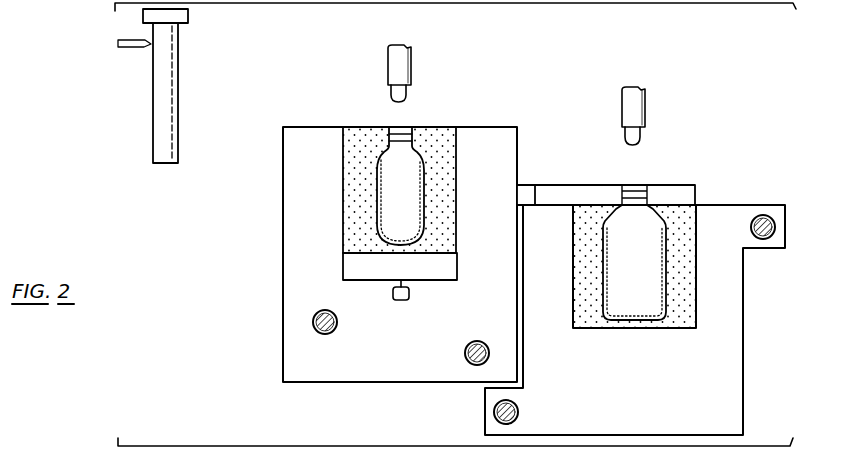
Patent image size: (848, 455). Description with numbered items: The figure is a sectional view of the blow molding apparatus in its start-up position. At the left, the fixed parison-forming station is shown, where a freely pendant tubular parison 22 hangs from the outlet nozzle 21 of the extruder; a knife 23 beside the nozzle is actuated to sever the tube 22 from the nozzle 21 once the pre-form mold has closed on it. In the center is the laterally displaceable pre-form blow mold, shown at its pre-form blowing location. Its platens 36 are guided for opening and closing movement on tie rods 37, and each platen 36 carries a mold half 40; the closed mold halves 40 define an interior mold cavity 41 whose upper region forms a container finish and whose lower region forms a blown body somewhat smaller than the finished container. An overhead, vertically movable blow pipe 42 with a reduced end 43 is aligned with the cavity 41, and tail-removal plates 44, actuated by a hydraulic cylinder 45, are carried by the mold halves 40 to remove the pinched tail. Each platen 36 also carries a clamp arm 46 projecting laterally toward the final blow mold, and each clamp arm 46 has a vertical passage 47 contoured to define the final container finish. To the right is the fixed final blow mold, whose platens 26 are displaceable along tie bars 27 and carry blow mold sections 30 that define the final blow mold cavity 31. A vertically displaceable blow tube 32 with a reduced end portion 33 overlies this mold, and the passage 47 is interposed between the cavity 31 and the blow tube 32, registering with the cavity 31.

The outlet nozzle 21 is at (143, 19).
The tubular parison 22 is at (172, 52).
The knife 23 is at (133, 47).
The platens 26 is at (650, 392).
The tie bars 27 is at (785, 228).
The blow mold sections 30 is at (688, 272).
The final blow mold cavity 31 is at (660, 298).
The blow tube 32 is at (645, 107).
The reduced end portion 33 is at (640, 140).
The platens 36 is at (412, 360).
The tie rods 37 is at (312, 323).
The mold half 40 is at (348, 203).
The interior mold cavity 41 is at (378, 222).
The blow pipe 42 is at (412, 63).
The reduced end 43 is at (406, 93).
The tail-removal plates 44 is at (438, 272).
The hydraulic cylinder 45 is at (406, 300).
The clamp arm 46 is at (695, 185).
The vertical passage 47 is at (623, 185).